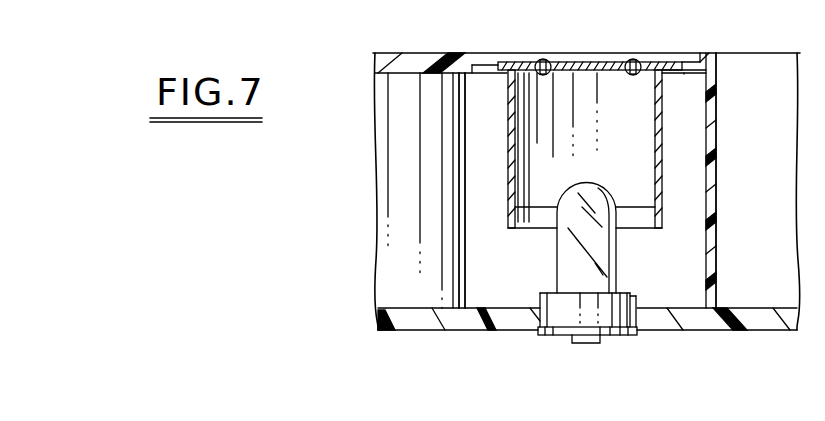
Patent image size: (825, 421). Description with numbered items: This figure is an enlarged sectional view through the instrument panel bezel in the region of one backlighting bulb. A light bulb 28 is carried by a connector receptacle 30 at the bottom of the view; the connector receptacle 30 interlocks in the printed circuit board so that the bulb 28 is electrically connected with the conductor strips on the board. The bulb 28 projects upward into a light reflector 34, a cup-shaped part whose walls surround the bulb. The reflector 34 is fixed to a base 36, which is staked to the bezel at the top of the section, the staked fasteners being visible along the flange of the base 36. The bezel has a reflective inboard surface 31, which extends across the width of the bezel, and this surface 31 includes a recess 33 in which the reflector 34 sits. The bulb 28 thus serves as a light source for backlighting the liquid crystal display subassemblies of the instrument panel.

The light bulb 28 is at (617, 258).
The connector receptacle 30 is at (640, 300).
The reflective inboard surface 31 is at (396, 178).
The recess 33 is at (696, 145).
The light reflector 34 is at (664, 105).
The base 36 is at (645, 63).